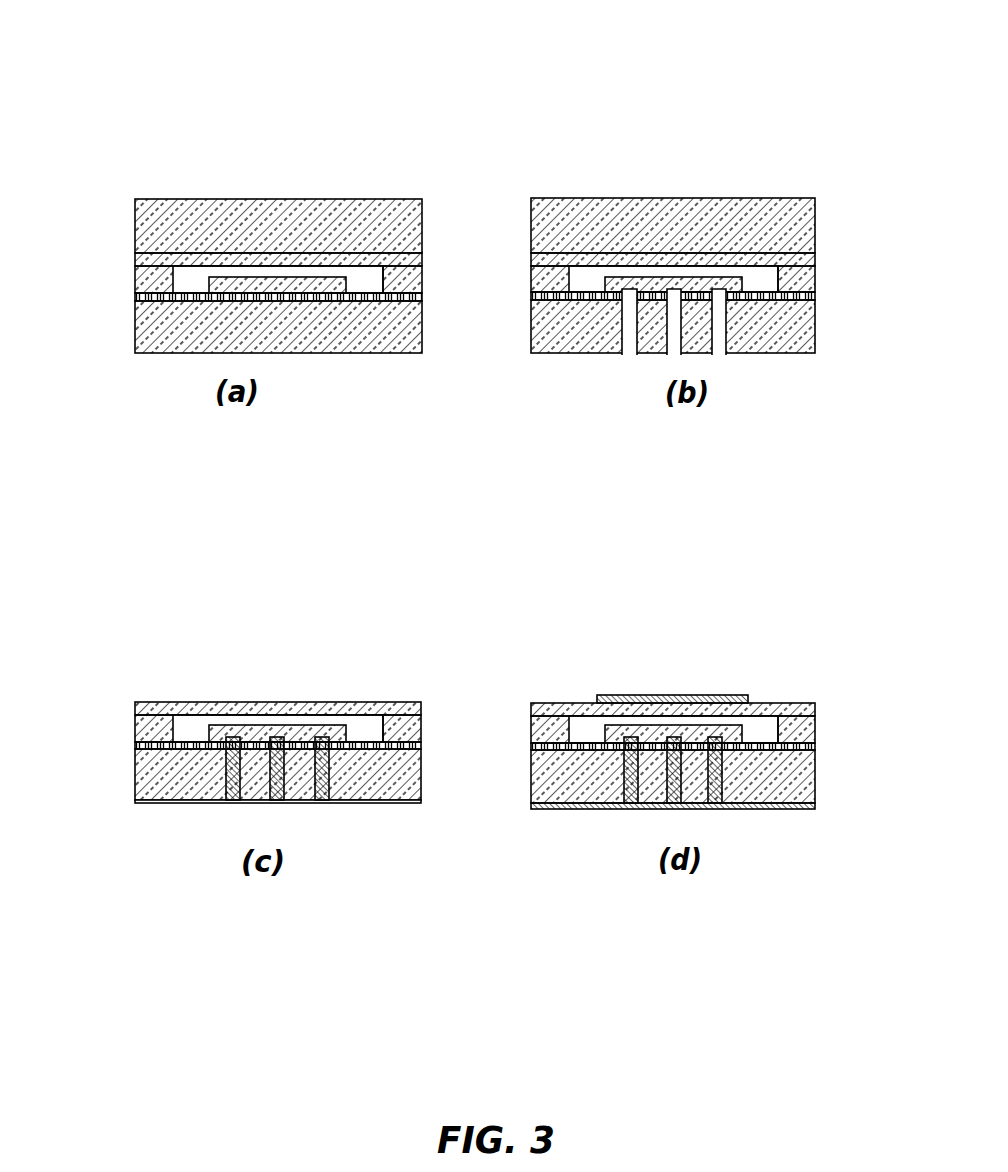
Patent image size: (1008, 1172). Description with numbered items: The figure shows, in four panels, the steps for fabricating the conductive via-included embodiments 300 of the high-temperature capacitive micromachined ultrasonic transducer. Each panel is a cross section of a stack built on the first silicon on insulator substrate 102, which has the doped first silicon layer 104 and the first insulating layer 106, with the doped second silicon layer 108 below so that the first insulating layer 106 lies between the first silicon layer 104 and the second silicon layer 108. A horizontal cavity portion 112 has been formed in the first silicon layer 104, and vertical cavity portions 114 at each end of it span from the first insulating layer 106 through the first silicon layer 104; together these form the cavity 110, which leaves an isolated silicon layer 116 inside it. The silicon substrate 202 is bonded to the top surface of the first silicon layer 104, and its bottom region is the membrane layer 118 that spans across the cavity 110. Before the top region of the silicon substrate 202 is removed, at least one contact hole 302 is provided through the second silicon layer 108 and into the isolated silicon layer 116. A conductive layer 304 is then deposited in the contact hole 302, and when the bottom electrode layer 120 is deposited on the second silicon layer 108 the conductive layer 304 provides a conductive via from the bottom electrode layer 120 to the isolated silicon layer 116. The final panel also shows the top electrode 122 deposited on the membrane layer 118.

The conductive via-included embodiments 300 is at (108, 76).
The silicon substrate 202 is at (118, 218).
The first silicon layer 104 is at (422, 277).
The first silicon on insulator (SOI) substrate 102 is at (118, 292).
The first insulating layer 106 is at (137, 300).
The second silicon layer 108 is at (422, 335).
The cavity 110 is at (185, 278).
The horizontal cavity portion 112 is at (218, 265).
The isolated silicon layer 116 is at (265, 278).
The membrane layer 118 is at (355, 258).
The vertical cavity portion 114 is at (385, 278).
The contact hole 302 is at (723, 315).
The conductive layer 304 is at (330, 775).
The bottom electrode layer 120 is at (183, 802).
The top electrode 122 is at (717, 695).